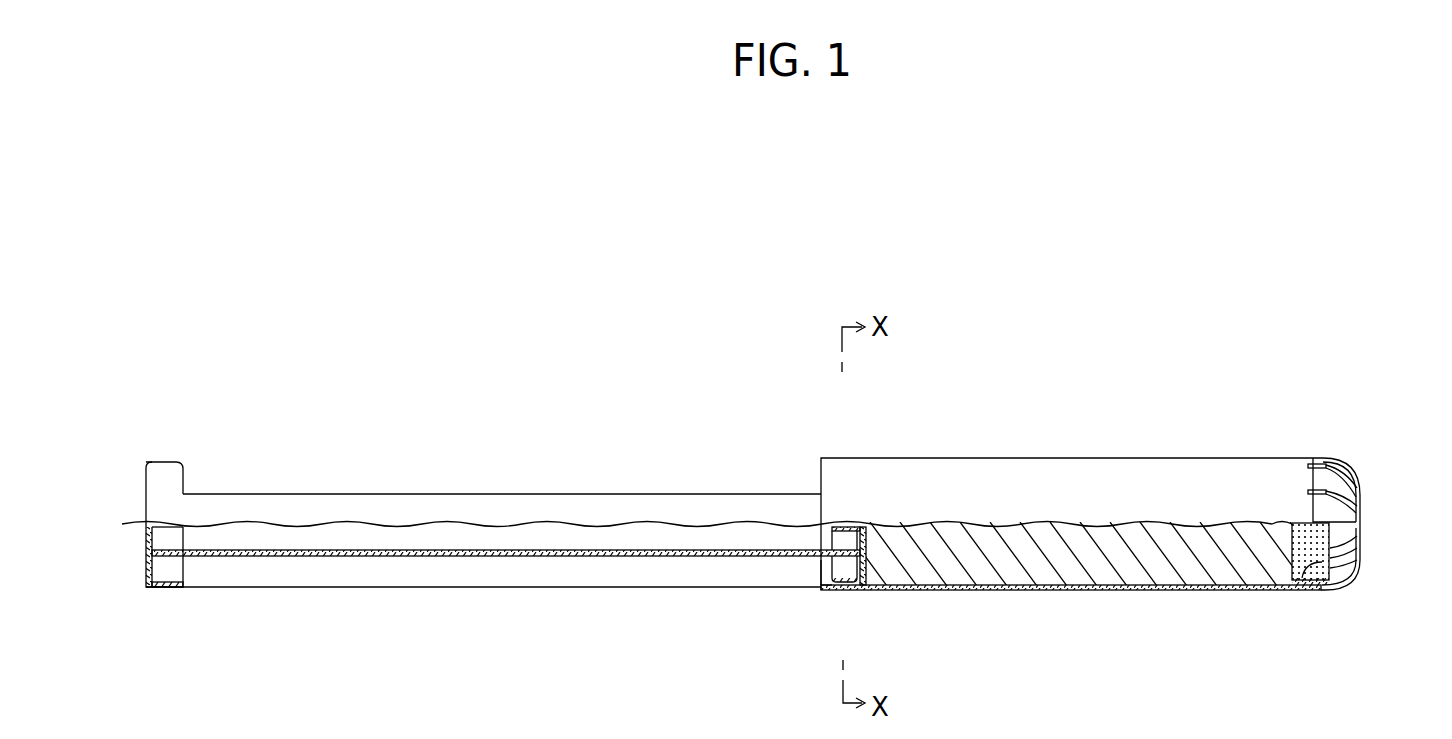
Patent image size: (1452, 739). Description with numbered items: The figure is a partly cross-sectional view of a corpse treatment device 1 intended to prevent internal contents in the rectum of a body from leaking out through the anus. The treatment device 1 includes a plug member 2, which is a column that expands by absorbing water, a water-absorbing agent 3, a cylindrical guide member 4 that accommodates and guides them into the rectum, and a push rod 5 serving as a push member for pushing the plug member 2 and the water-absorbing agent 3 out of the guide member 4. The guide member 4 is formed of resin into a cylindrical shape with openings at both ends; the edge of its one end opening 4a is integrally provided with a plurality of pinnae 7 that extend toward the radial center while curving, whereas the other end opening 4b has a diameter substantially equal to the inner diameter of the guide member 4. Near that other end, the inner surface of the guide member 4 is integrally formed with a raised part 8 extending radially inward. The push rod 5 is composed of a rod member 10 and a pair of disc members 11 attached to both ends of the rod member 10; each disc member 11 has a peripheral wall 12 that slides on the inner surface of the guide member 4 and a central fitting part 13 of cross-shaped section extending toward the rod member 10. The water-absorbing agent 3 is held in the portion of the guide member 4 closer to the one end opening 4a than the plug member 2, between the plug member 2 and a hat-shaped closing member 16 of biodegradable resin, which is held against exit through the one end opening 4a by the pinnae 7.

The corpse treatment device 1 is at (757, 322).
The plug member 2 is at (1268, 572).
The water-absorbing agent 3 is at (1305, 540).
The cylindrical guide member 4 is at (1080, 594).
The one end opening 4a is at (1345, 484).
The other end opening 4b is at (817, 566).
The push rod 5 is at (540, 558).
The pinnae 7 is at (1330, 480).
The raised part 8 is at (818, 582).
The rod member 10 is at (370, 494).
The disc members 11 is at (146, 576).
The peripheral wall 12 is at (163, 590).
The fitting part 13 is at (185, 540).
The closing member 16 is at (1310, 571).